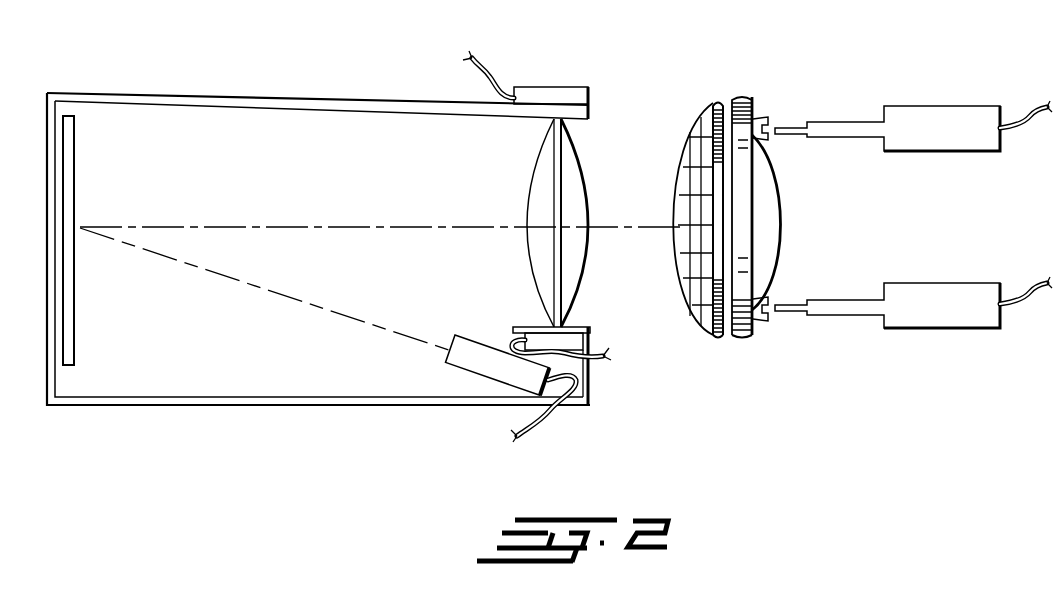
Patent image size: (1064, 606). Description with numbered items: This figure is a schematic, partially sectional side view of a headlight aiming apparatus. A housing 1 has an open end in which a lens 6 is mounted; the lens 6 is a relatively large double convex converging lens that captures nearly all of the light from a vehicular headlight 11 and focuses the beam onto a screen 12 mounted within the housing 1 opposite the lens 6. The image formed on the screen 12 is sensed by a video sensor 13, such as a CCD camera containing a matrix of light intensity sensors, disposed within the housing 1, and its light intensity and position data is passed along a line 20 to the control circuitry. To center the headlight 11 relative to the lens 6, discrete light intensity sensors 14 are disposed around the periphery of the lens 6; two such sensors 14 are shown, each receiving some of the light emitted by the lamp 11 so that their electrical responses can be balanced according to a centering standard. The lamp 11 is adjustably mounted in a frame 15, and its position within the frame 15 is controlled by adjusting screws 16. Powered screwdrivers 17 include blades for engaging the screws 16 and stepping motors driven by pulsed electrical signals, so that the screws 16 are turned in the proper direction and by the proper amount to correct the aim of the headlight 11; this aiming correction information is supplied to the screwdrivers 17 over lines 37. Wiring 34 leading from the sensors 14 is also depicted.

The housing 1 is at (233, 93).
The lens 6 is at (587, 268).
The vehicular headlight 11 is at (692, 140).
The screen 12 is at (75, 346).
The video sensor 13 is at (452, 352).
The light intensity sensor 14 is at (545, 87).
The frame 15 is at (745, 97).
The adjusting screw 16 is at (766, 118).
The powered screwdriver 17 is at (950, 151).
The line 20 is at (537, 430).
The lead wire 34 is at (478, 62).
The line 37 is at (1022, 130).